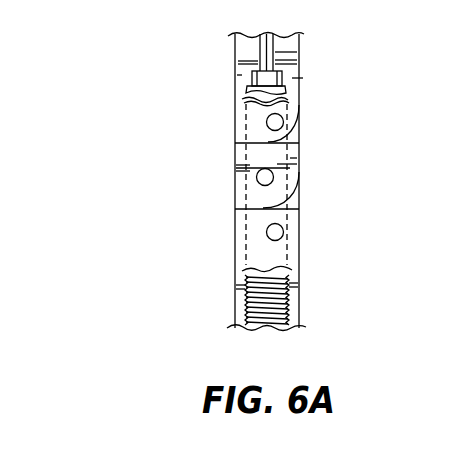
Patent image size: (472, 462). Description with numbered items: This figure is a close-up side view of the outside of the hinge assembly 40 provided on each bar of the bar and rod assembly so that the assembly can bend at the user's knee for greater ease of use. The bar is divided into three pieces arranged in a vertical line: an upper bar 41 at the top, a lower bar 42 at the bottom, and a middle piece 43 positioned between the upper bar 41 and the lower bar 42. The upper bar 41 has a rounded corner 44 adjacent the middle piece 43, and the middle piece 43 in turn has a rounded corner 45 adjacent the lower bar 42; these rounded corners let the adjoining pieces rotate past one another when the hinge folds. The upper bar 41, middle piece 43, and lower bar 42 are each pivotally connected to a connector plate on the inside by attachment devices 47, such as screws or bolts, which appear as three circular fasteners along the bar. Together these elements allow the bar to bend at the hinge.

The hinge assembly 40 is at (148, 87).
The upper bar 41 is at (294, 77).
The lower bar 42 is at (238, 252).
The middle piece 43 is at (238, 190).
The rounded corner 44 is at (300, 133).
The rounded corner 45 is at (299, 193).
The attachment devices 47 is at (272, 122).